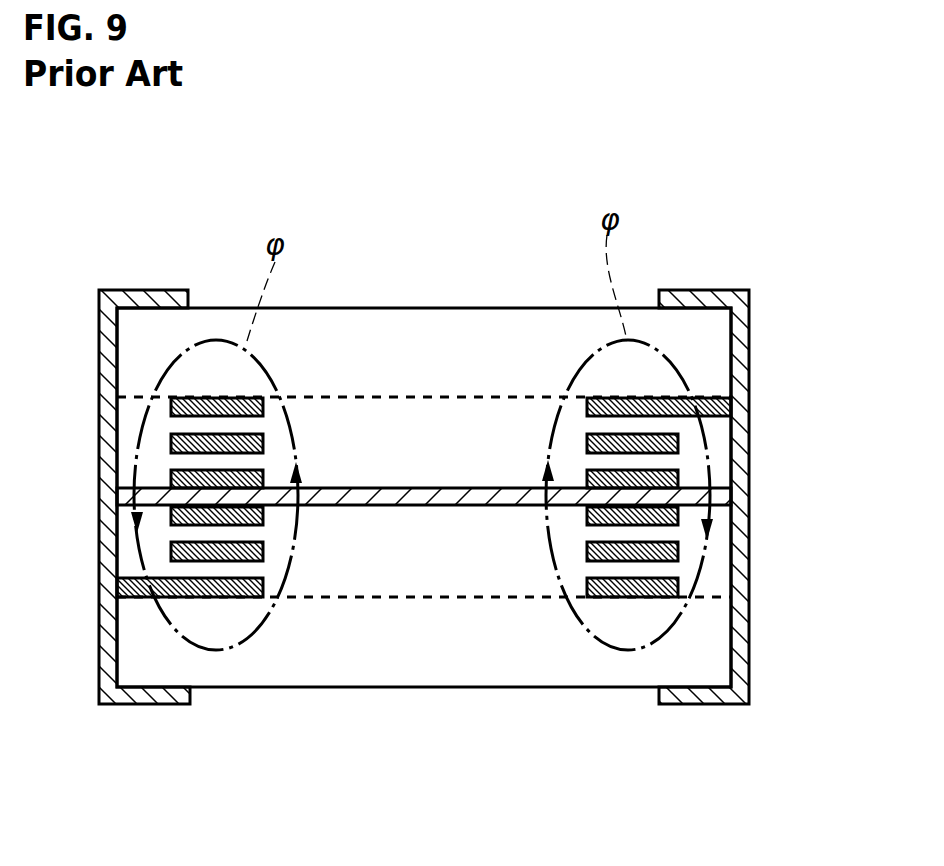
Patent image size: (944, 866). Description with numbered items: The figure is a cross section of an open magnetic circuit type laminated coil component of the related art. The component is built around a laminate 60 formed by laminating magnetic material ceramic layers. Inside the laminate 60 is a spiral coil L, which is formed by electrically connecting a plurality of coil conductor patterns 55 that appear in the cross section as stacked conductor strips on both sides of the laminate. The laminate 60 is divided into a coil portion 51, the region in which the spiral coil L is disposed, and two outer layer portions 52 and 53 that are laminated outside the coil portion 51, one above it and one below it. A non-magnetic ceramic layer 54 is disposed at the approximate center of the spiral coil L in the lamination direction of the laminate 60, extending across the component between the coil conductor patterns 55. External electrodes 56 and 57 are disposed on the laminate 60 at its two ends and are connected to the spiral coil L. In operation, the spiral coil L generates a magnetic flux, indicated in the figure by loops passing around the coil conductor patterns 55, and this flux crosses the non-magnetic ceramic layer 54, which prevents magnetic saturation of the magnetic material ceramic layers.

The coil portion 51 is at (793, 405).
The outer layer portion 52 is at (793, 290).
The outer layer portion 53 is at (793, 602).
The non-magnetic ceramic layer 54 is at (464, 505).
The coil conductor patterns 55 is at (263, 440).
The external electrode 56 is at (136, 289).
The external electrode 57 is at (717, 289).
The laminate 60 is at (468, 273).
The spiral coil L is at (273, 568).